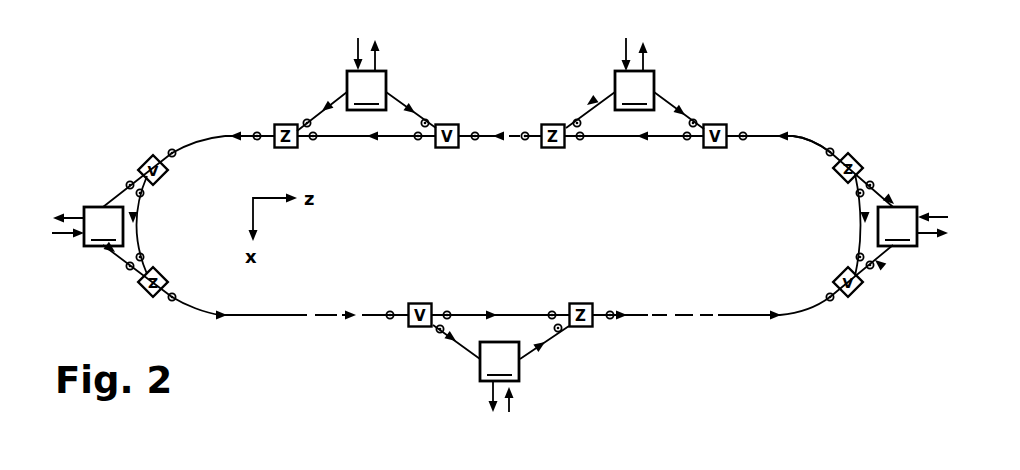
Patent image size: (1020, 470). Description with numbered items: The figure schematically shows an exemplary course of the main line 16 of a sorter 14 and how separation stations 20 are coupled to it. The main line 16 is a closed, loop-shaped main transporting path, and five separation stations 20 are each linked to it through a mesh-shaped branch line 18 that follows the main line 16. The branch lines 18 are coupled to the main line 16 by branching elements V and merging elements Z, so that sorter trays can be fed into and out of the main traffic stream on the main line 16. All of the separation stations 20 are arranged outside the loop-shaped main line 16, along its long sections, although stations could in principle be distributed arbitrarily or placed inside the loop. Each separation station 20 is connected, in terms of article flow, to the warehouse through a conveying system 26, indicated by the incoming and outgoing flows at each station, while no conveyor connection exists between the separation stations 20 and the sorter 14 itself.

The sorter 14 is at (829, 92).
The main line 16 is at (190, 134).
The branch line 18 is at (114, 191).
The separation station 20 is at (500, 226).
The conveying system 26 is at (55, 233).